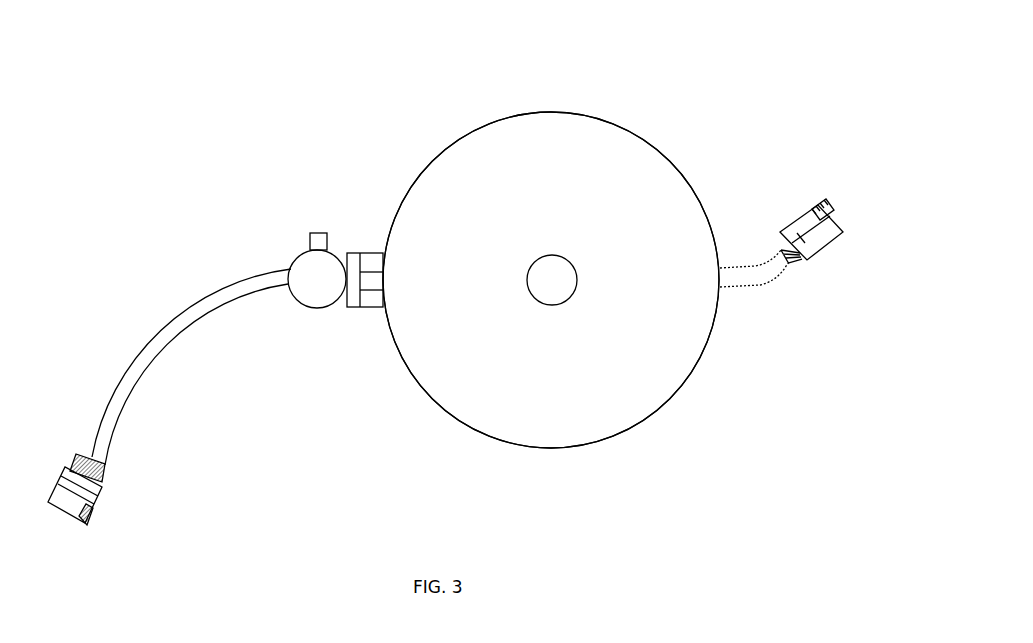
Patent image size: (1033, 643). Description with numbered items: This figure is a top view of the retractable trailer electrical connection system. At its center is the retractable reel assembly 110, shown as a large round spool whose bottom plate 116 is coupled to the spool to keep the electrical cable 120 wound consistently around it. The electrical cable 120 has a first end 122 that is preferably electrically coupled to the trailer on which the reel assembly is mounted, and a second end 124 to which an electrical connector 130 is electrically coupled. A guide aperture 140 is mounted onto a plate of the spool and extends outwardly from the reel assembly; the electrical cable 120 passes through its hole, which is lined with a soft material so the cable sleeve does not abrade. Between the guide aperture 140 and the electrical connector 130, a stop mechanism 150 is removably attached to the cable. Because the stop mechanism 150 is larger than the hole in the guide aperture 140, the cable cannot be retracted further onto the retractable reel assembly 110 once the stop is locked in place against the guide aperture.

The retractable reel assembly 110 is at (429, 103).
The bottom plate 116 is at (642, 130).
The electrical cable 120 is at (178, 311).
The first end 122 is at (802, 259).
The second end 124 is at (99, 461).
The electrical connector 130 is at (101, 502).
The guide aperture 140 is at (371, 247).
The stop mechanism 150 is at (293, 265).